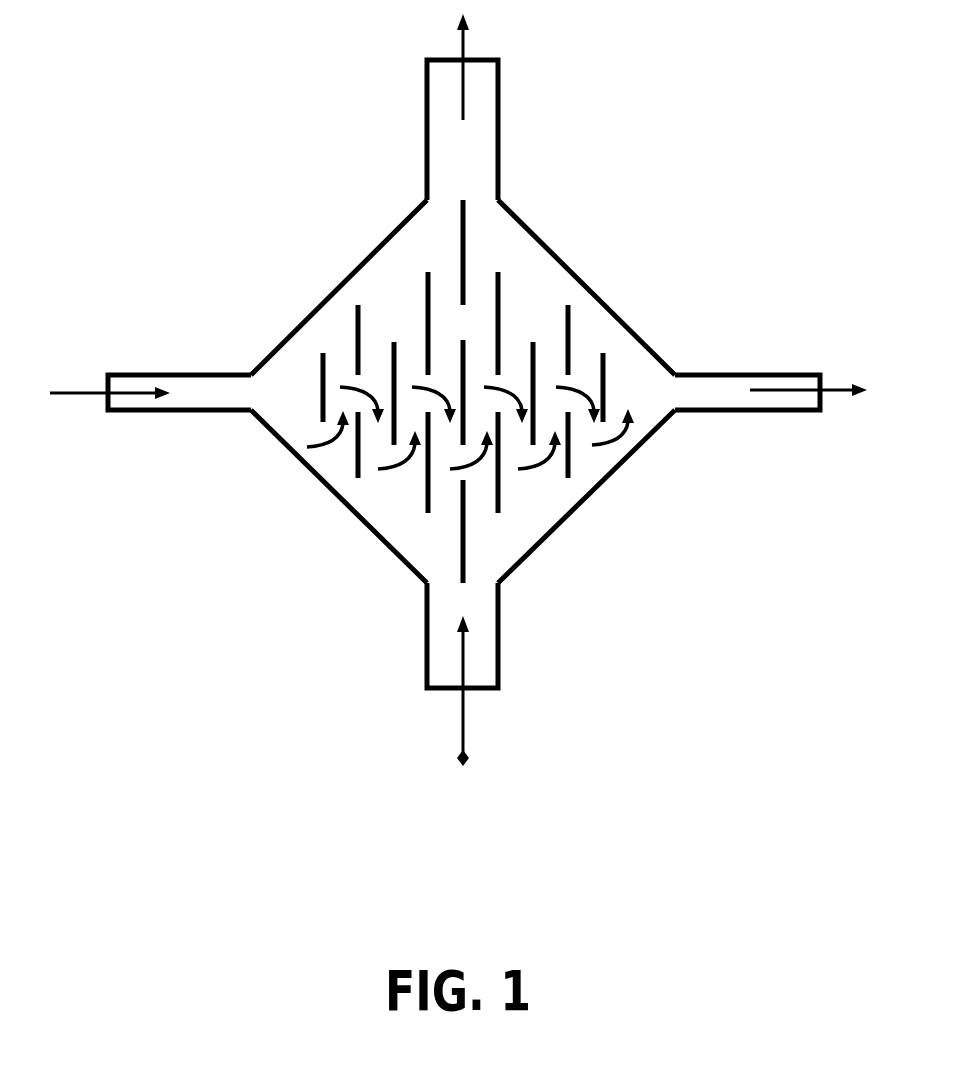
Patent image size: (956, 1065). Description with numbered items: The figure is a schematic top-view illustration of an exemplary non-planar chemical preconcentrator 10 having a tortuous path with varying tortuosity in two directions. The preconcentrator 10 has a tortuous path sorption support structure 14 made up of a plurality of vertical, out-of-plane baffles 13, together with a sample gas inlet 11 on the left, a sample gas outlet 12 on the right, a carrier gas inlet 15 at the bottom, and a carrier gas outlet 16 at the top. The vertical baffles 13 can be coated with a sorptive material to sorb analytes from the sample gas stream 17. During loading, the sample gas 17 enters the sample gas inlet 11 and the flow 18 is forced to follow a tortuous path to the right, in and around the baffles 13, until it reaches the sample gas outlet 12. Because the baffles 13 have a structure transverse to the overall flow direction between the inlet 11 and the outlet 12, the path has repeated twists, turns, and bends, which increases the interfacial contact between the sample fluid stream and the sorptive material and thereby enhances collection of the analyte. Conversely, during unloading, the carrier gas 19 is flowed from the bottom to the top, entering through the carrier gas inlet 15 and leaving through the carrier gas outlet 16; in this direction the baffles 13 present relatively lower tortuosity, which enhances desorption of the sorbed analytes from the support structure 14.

The chemical preconcentrator 10 is at (163, 71).
The sample gas inlet 11 is at (180, 373).
The sample gas outlet 12 is at (742, 373).
The vertical baffles 13 is at (568, 332).
The tortuous path sorption support structure 14 is at (534, 272).
The carrier gas inlet 15 is at (428, 635).
The carrier gas outlet 16 is at (425, 123).
The sample gas stream 17 is at (91, 394).
The flow 18 is at (325, 425).
The carrier gas 19 is at (465, 711).